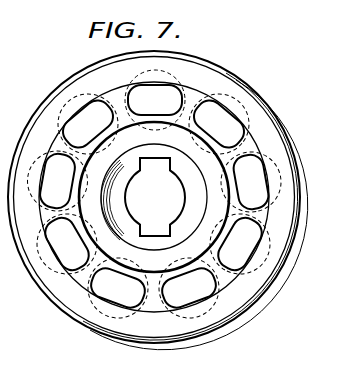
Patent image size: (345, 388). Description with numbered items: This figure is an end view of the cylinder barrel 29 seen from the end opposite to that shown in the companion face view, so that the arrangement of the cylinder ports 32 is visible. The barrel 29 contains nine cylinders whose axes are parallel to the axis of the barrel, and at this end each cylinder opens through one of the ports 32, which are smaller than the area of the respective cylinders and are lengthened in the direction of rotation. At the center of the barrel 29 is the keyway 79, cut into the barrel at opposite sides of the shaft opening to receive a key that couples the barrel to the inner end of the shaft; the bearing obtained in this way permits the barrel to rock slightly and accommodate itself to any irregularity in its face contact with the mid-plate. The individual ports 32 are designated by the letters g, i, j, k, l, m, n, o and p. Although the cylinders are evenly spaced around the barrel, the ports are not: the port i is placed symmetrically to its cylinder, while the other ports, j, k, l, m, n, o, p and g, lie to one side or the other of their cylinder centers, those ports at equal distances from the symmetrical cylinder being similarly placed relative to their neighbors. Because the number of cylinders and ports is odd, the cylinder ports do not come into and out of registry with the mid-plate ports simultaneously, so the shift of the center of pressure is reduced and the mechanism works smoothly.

The cylinder barrel 29 is at (253, 95).
The ports 32 is at (153, 177).
The keyway 79 is at (155, 197).
The recess g is at (88, 124).
The port i is at (155, 100).
The port j is at (219, 124).
The port k is at (251, 182).
The port l is at (240, 244).
The port m is at (189, 288).
The port n is at (118, 288).
The port o is at (67, 244).
The port p is at (58, 181).